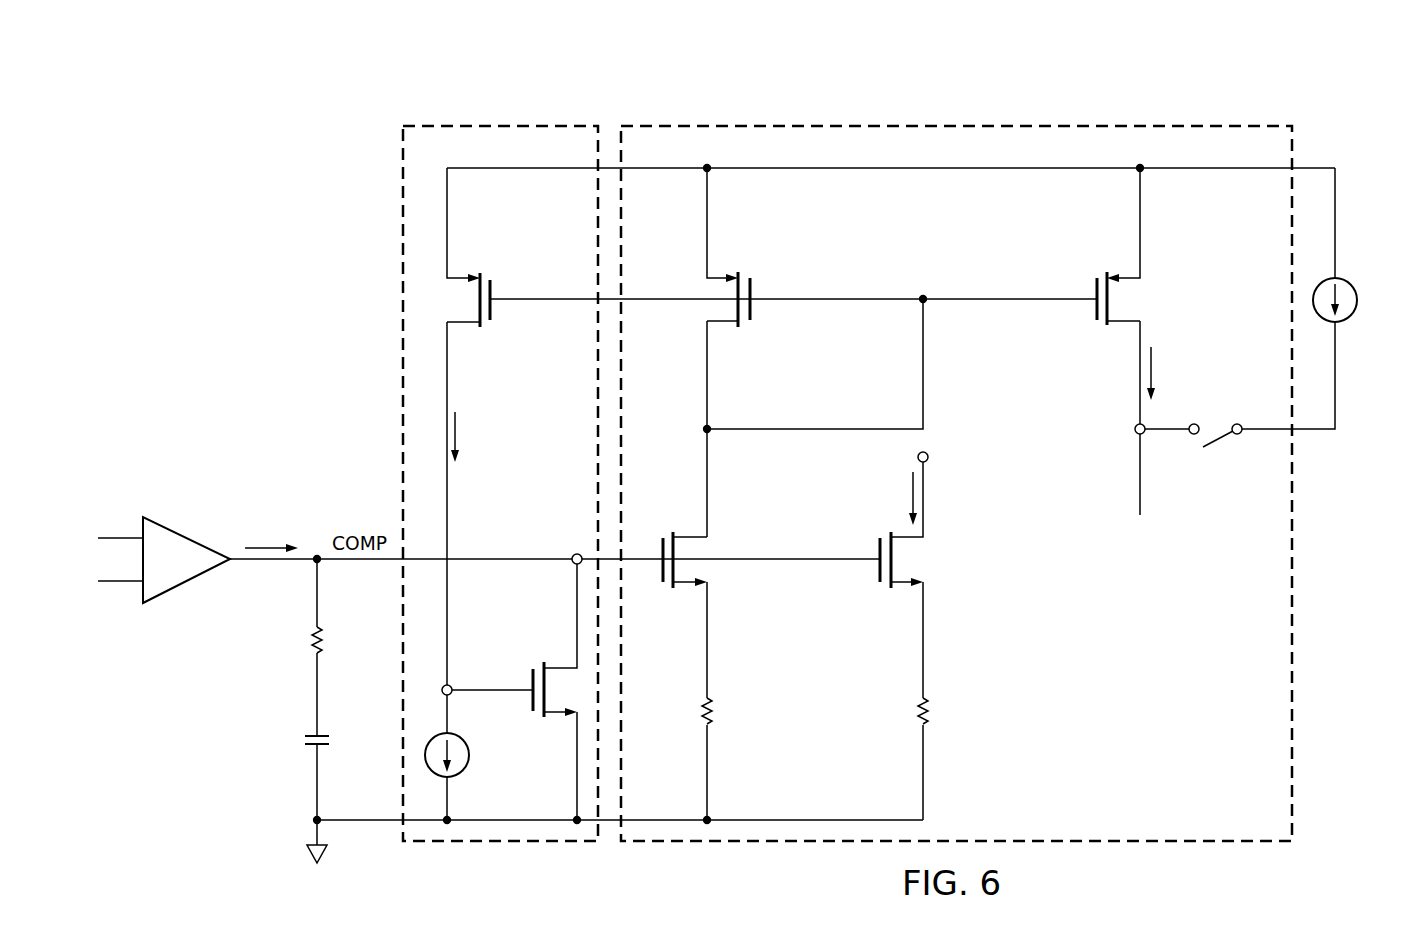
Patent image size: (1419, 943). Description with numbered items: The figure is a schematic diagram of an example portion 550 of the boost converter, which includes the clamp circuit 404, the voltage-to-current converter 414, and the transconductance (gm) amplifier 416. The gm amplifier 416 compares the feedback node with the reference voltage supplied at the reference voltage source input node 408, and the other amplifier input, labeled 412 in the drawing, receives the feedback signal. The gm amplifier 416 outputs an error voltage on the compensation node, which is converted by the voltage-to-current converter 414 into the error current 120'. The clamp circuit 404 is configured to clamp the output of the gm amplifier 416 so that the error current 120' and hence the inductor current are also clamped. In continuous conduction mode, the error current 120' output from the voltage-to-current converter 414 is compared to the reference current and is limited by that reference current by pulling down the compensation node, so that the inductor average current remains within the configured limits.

The example portion 550 is at (525, 70).
The clamp circuit 404 is at (432, 115).
The voltage-to-current converter 414 is at (1066, 115).
The input node 408 is at (123, 537).
The feedback input 412 is at (125, 585).
The transconductance amplifier 416 is at (187, 583).
The current 120' is at (386, 463).